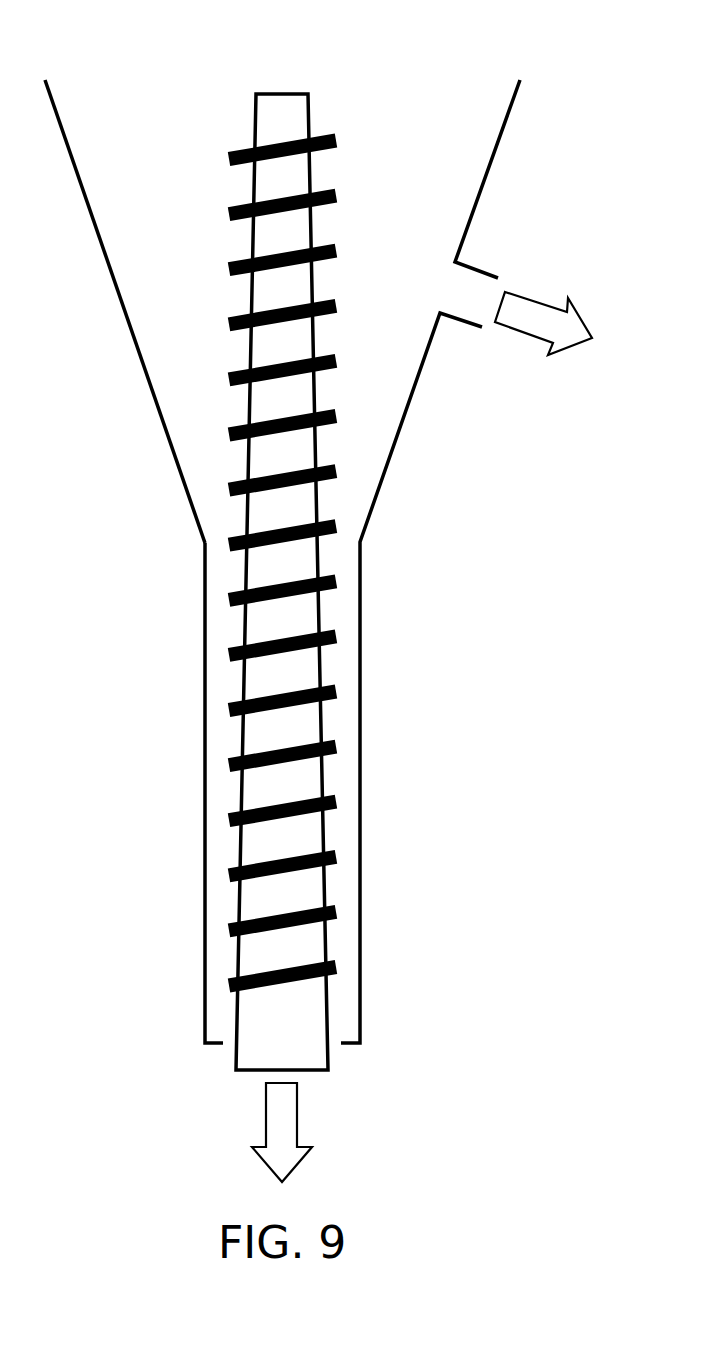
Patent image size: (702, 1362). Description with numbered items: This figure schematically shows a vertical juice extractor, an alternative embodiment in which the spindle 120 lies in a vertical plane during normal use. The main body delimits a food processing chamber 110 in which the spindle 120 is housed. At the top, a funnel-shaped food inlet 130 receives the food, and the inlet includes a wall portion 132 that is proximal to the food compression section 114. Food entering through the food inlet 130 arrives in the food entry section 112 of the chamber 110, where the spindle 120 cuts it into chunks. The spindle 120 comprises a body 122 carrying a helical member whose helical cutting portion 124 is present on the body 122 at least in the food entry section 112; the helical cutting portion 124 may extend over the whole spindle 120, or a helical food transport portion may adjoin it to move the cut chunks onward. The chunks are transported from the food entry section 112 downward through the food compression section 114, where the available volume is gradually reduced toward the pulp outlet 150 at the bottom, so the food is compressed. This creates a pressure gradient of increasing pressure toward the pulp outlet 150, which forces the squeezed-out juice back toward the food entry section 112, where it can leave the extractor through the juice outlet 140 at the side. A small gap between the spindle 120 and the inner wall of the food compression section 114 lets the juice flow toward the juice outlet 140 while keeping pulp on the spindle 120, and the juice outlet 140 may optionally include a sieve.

The food processing chamber 110 is at (362, 677).
The food entry section 112 is at (457, 174).
The food compression section 114 is at (347, 825).
The spindle 120 is at (245, 683).
The body 122 is at (263, 737).
The helical cutting portion 124 is at (229, 822).
The food inlet 130 is at (379, 75).
The wall portion 132 is at (205, 545).
The juice outlet 140 is at (483, 315).
The pulp outlet 150 is at (335, 1046).